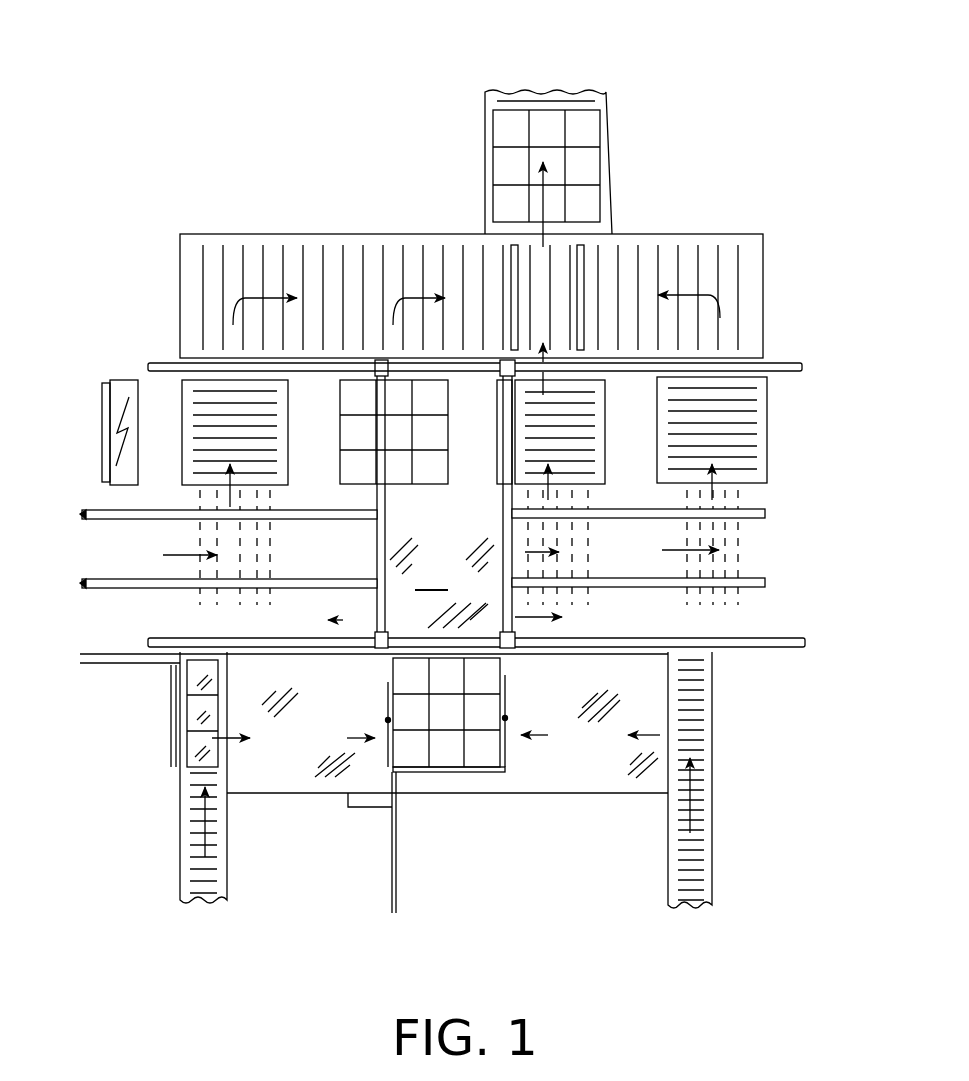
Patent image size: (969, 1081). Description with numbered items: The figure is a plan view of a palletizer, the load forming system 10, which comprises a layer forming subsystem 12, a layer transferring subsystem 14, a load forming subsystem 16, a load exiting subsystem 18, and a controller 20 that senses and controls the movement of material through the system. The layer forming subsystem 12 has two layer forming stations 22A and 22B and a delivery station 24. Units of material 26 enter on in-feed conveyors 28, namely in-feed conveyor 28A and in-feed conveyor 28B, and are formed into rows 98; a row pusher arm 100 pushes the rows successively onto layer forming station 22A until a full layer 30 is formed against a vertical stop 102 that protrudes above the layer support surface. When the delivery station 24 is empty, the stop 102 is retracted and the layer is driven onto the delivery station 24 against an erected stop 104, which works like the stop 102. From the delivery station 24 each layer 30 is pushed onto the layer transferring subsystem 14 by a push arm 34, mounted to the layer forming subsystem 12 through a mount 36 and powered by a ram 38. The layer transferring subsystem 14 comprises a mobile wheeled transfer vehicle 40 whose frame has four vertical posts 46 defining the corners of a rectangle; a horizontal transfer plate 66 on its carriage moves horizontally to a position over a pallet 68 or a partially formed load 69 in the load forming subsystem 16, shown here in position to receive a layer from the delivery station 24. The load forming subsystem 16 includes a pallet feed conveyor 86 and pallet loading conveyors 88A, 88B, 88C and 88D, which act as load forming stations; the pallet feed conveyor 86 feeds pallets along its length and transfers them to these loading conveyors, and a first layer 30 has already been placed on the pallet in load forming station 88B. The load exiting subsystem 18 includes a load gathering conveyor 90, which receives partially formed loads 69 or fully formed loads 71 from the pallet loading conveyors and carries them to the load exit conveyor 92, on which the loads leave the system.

The load forming system 10 is at (700, 78).
The layer forming subsystem 12 is at (543, 805).
The layer transferring subsystem 14 is at (368, 536).
The load forming subsystem 16 is at (778, 413).
The load exiting subsystem 18 is at (690, 228).
The controller 20 is at (118, 380).
The layer forming station 22A is at (270, 795).
The layer forming station 22B is at (637, 795).
The delivery station 24 is at (427, 795).
The units of material 26 is at (192, 782).
The in-feed conveyors 28 is at (233, 886).
The in-feed conveyor 28A is at (180, 870).
The in-feed conveyor 28B is at (713, 877).
The layer 30 is at (452, 468).
The push arm 34 is at (470, 775).
The mount 36 is at (349, 806).
The ram 38 is at (397, 900).
The mobile wheeled transfer vehicle 40 is at (368, 501).
The vertical members or posts 46 is at (503, 368).
The transfer plate 66 is at (443, 512).
The pallet 68 is at (597, 469).
The partially formed load 69 is at (602, 125).
The fully formed load 71 is at (398, 364).
The pallet feed conveyor 86 is at (137, 590).
The pallet loading conveyor 88A is at (182, 480).
The pallet loading conveyor 88B is at (340, 470).
The pallet loading conveyor 88C is at (497, 462).
The pallet loading conveyor 88D is at (768, 392).
The load gathering conveyor 90 is at (270, 233).
The load exit conveyor 92 is at (612, 170).
The rows 98 is at (163, 688).
The row pusher arm 100 is at (172, 731).
The vertical stop 102 is at (385, 752).
The stop 104 is at (503, 762).